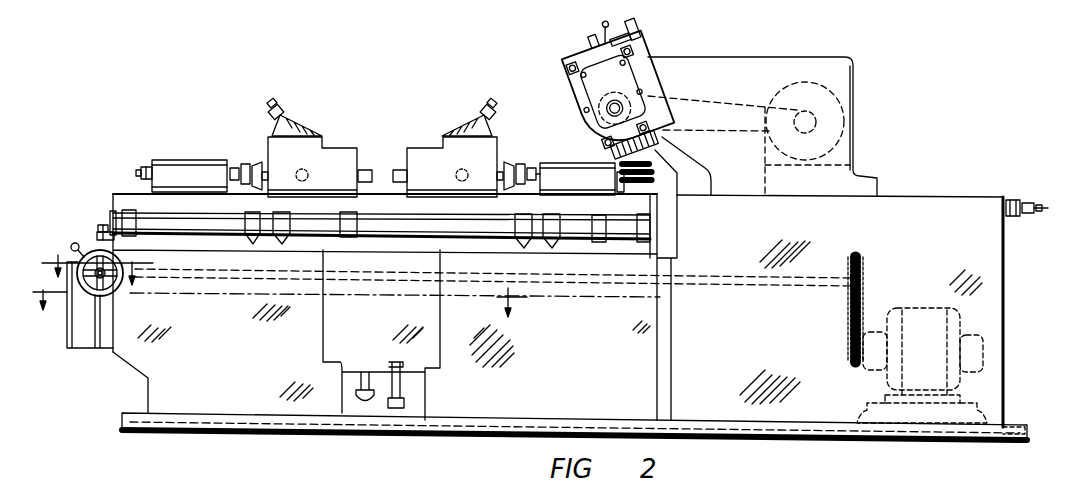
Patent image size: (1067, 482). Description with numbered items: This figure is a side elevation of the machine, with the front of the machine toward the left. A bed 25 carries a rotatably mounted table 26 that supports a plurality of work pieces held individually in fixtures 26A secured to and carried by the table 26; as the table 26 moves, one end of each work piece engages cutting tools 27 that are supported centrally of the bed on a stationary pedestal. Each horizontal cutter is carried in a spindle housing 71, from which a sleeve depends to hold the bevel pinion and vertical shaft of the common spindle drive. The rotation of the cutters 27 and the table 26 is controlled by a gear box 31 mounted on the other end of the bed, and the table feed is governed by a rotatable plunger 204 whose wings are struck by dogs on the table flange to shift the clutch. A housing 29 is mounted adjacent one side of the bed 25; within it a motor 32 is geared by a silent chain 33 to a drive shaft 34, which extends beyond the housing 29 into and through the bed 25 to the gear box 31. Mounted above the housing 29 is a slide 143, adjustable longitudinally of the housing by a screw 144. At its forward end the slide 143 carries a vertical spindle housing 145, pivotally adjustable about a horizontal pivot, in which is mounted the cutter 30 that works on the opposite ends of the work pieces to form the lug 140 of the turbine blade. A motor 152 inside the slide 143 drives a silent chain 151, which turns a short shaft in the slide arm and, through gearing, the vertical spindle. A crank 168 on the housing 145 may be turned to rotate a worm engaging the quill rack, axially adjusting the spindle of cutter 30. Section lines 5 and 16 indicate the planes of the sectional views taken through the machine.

The bed 25 is at (177, 402).
The table 26 is at (113, 203).
The fixtures 26A is at (201, 150).
The cutting tools 27 is at (256, 163).
The housing 29 is at (980, 288).
The cutter 30 is at (655, 170).
The gear box 31 is at (88, 343).
The motor 32 is at (940, 300).
The silent chain 33 is at (858, 293).
The drive shaft 34 is at (818, 283).
The spindle housing 71 is at (423, 162).
The lug 140 is at (140, 172).
The slide 143 is at (789, 47).
The screw 144 is at (1053, 190).
The vertical spindle housing 145 is at (590, 125).
The silent chain 151 is at (722, 108).
The motor 152 is at (828, 110).
The crank 168 is at (634, 38).
The rotatable plunger 204 is at (97, 234).
The section line 5- 5 is at (97, 260).
The section line 16- 16 is at (343, 293).